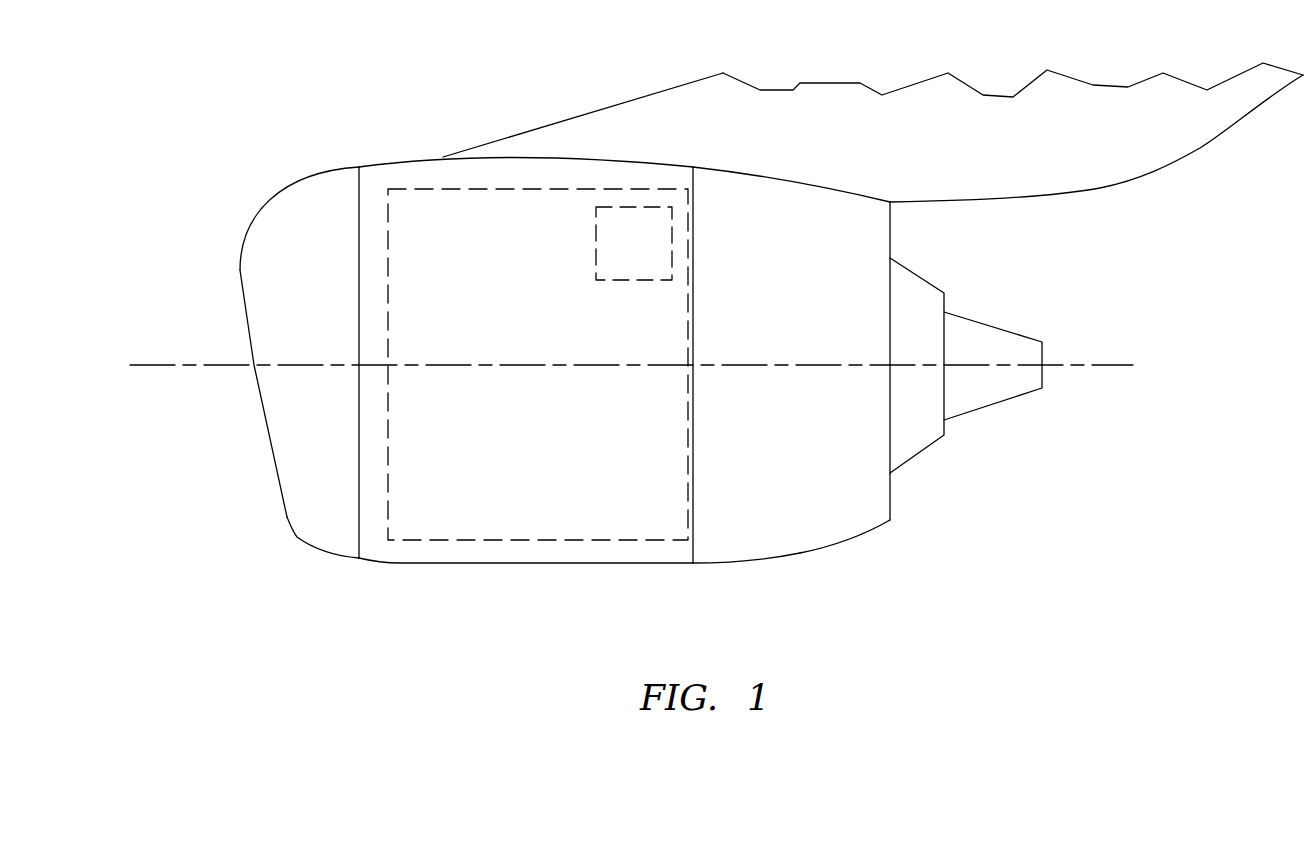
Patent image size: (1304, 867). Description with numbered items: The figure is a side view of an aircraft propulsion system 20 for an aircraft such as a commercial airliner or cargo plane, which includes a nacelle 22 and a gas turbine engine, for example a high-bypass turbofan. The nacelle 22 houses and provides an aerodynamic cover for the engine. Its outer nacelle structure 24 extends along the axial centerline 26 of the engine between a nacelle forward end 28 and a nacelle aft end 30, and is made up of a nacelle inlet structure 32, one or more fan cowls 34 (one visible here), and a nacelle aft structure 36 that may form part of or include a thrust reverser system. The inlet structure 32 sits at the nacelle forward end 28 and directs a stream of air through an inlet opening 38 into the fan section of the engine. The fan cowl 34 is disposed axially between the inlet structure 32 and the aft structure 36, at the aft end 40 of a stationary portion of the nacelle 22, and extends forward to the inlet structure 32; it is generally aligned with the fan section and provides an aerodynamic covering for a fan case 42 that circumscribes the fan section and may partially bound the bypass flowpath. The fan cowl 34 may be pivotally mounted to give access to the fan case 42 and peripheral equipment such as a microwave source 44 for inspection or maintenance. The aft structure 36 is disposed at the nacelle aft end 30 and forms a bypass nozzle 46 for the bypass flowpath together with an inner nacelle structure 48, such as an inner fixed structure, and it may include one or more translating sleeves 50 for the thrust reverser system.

The aircraft propulsion system 20 is at (243, 157).
The nacelle 22 is at (347, 150).
The outer nacelle structure 24 is at (422, 155).
The axial centerline 26 is at (1122, 365).
The nacelle forward end 28 is at (240, 288).
The nacelle aft end 30 is at (890, 228).
The nacelle inlet structure 32 is at (297, 538).
The fan cowl 34 is at (502, 577).
The nacelle aft structure 36 is at (795, 563).
The inlet opening 38 is at (240, 332).
The aft end of stationary portion 40 is at (695, 182).
The fan case 42 is at (627, 540).
The microwave source 44 is at (637, 207).
The bypass nozzle 46 is at (890, 497).
The inner nacelle structure 48 is at (927, 448).
The translating sleeve 50 is at (850, 537).